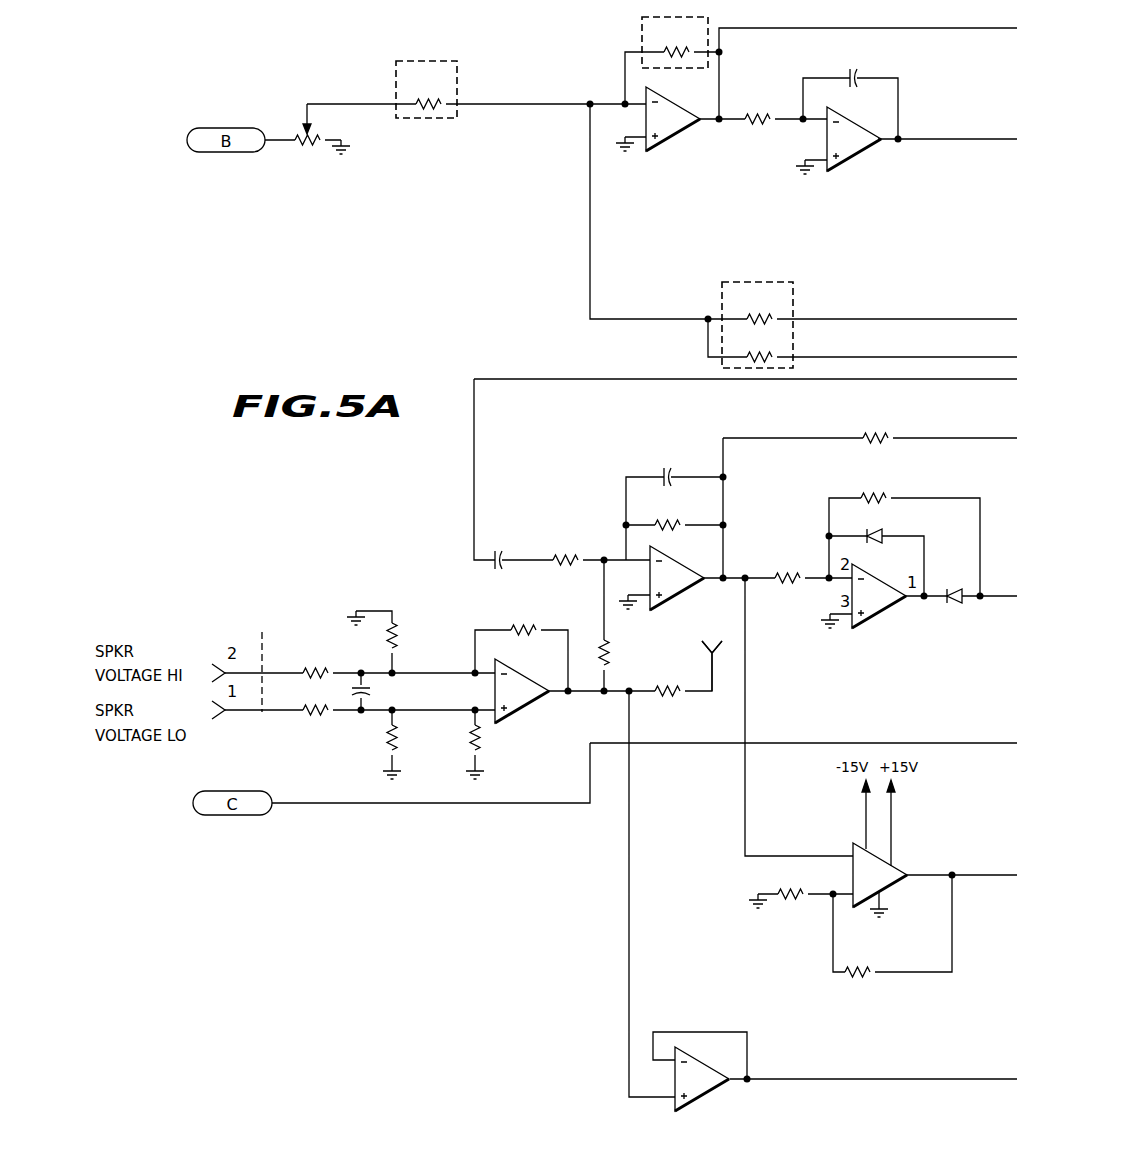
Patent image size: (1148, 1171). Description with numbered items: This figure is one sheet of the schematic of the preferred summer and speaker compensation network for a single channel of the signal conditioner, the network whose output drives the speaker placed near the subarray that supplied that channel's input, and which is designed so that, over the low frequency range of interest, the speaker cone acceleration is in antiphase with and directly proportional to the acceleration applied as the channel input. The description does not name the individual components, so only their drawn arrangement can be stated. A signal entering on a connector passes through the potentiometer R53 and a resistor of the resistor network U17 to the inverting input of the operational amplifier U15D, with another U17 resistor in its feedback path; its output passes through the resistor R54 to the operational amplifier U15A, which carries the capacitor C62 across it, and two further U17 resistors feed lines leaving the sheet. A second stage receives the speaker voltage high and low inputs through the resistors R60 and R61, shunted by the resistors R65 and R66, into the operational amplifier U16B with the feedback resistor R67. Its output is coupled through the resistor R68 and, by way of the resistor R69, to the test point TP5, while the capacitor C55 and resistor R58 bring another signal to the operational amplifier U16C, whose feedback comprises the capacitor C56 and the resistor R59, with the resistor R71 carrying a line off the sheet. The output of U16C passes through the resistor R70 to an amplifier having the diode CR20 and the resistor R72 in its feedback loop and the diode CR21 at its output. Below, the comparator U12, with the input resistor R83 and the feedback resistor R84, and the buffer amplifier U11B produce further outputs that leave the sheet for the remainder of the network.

The potentiometer R53 is at (315, 136).
The resistor network U17 is at (594, 192).
The operational amplifier U15D is at (681, 147).
The resistor R54 is at (759, 108).
The capacitor C62 is at (853, 67).
The operational amplifier U15A is at (858, 162).
The resistor R71 is at (877, 427).
The capacitor C56 is at (655, 467).
The resistor R59 is at (669, 514).
The capacitor C55 is at (500, 551).
The resistor R58 is at (567, 549).
The operational amplifier U16C is at (674, 600).
The test point TP5 is at (711, 656).
The resistor R70 is at (789, 567).
The resistor R72 is at (875, 487).
The diode CR20 is at (868, 526).
The diode CR21 is at (955, 610).
The resistor R60 is at (317, 662).
The resistor R61 is at (317, 699).
The resistor R65 is at (410, 744).
The resistor R66 is at (492, 744).
The resistor R67 is at (525, 619).
The resistor R68 is at (620, 652).
The resistor R69 is at (669, 702).
The operational amplifier U16B is at (520, 711).
The resistor R83 is at (792, 904).
The resistor R84 is at (859, 983).
The comparator U12 is at (902, 880).
The operational amplifier U11B is at (700, 1104).